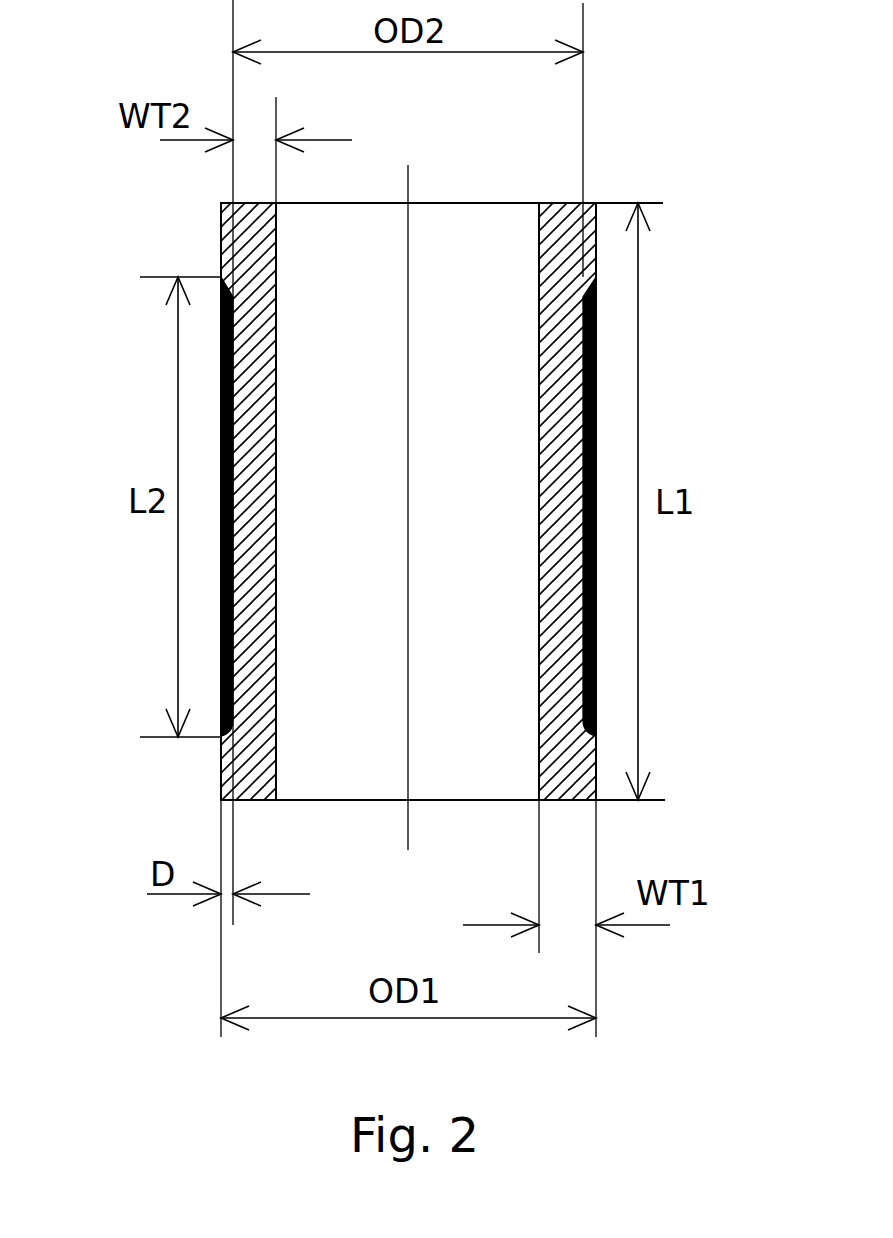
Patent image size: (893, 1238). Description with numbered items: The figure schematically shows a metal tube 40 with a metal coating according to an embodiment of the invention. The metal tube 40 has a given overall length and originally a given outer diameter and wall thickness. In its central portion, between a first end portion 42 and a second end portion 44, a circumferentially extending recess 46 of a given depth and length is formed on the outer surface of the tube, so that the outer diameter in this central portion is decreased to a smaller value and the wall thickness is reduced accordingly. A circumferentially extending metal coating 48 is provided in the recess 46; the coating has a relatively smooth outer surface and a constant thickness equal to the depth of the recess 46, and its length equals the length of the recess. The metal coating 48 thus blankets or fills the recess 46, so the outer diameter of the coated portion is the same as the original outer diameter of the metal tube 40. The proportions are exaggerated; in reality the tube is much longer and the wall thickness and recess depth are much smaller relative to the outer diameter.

The metal tube 40 is at (570, 263).
The first end portion 42 is at (253, 253).
The second end portion 44 is at (253, 778).
The circumferentially extending recess 46 is at (236, 722).
The metal coating 48 is at (221, 630).